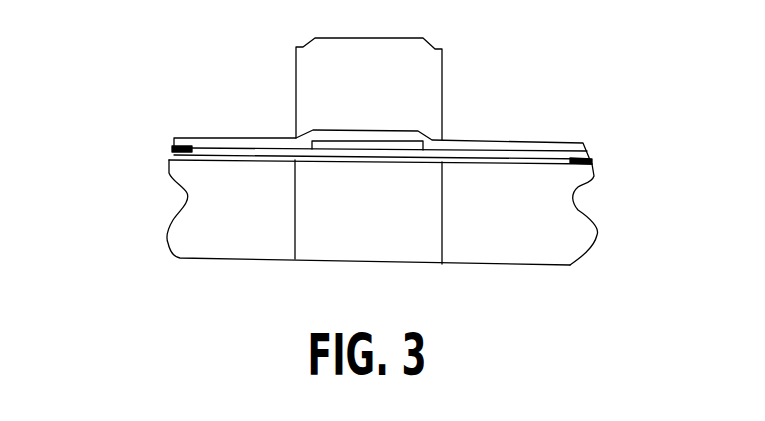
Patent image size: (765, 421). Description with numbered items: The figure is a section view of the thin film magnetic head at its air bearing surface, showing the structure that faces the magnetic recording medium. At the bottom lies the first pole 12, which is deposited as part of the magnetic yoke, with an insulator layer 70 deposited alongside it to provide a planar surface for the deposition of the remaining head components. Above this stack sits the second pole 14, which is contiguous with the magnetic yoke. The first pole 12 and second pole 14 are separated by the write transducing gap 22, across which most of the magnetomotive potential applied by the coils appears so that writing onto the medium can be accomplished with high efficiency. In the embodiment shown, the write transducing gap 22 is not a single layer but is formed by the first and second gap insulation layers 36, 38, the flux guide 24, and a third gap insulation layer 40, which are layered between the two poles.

The first pole 12 is at (356, 230).
The second pole 14 is at (369, 89).
The write transducing gap 22 is at (436, 142).
The flux guide 24 is at (399, 146).
The first gap insulation layer 36 is at (592, 160).
The second gap insulation layer 38 is at (172, 150).
The third gap insulation layer 40 is at (225, 145).
The insulator layer 70 is at (492, 232).